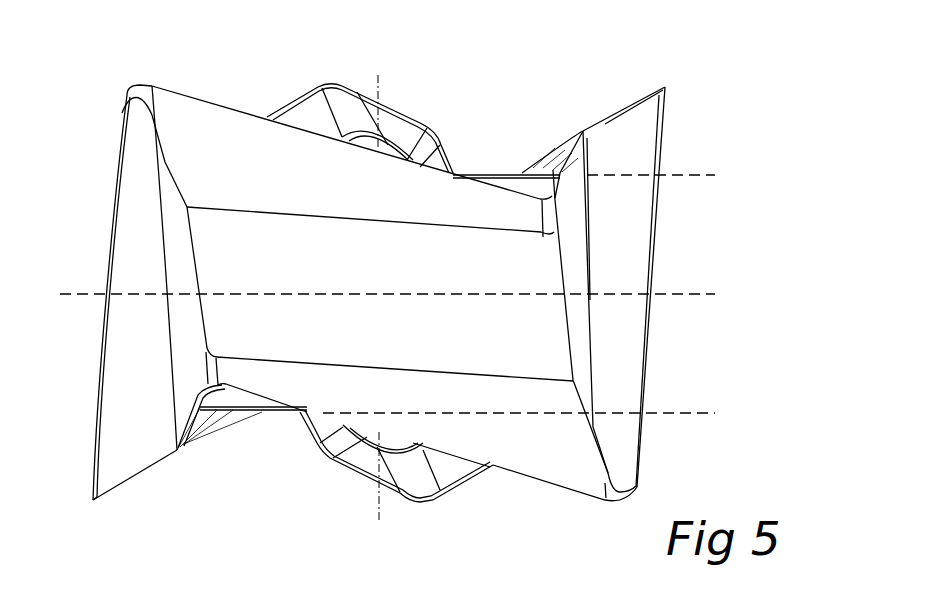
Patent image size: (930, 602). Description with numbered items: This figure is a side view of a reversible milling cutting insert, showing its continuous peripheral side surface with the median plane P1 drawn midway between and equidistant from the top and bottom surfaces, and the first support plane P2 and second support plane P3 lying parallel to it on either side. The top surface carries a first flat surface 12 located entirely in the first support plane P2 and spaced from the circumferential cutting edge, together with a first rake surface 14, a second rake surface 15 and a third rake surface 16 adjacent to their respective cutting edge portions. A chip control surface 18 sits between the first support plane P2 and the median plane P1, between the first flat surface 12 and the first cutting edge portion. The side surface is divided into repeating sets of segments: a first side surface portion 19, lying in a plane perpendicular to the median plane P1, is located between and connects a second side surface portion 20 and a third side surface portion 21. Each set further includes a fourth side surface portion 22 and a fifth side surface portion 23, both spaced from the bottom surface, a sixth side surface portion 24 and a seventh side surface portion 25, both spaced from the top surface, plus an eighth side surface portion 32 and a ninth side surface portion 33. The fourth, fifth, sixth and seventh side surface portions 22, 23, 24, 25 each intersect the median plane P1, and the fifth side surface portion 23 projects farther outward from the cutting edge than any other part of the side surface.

The first flat surface 12 is at (467, 177).
The first rake surface 14 is at (303, 120).
The second rake surface 15 is at (353, 105).
The third rake surface 16 is at (395, 125).
The chip control surface 18 is at (510, 185).
The first side surface portion 19 is at (357, 270).
The second side surface portion 20 is at (302, 188).
The third side surface portion 21 is at (546, 462).
The fourth side surface portion 22 is at (568, 205).
The fifth side surface portion 23 is at (639, 241).
The sixth side surface portion 24 is at (188, 353).
The seventh side surface portion 25 is at (150, 345).
The eighth side surface portion 32 is at (128, 97).
The ninth side surface portion 33 is at (95, 490).
The median plane P1 is at (406, 294).
The first support plane P2 is at (669, 175).
The second support plane P3 is at (537, 413).